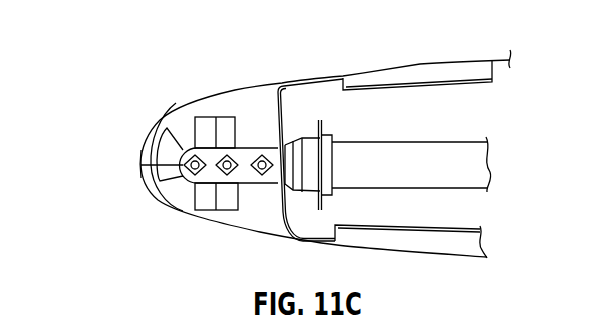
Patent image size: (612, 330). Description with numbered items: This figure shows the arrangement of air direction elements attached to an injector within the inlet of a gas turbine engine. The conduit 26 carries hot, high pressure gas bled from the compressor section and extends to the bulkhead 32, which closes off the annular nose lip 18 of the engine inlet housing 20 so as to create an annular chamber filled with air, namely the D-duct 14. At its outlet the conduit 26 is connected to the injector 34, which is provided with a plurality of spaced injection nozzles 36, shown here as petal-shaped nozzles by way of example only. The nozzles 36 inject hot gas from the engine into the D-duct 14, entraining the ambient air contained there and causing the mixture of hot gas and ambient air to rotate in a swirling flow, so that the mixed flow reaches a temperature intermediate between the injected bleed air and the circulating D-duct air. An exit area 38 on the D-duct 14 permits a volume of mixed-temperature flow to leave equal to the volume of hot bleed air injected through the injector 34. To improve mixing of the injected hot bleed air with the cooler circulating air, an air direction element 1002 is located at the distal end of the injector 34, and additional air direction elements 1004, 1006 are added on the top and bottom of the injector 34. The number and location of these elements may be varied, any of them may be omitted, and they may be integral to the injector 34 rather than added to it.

The D-duct 14 is at (144, 167).
The annular nose lip 18 is at (251, 90).
The engine inlet housing 20 is at (421, 64).
The conduit 26 is at (412, 141).
The bulkhead 32 is at (279, 109).
The injector 34 is at (208, 145).
The injection nozzles 36 is at (262, 146).
The exit area 38 is at (160, 182).
The air direction element 1002 is at (146, 162).
The air direction element 1004 is at (216, 116).
The air direction element 1006 is at (208, 212).